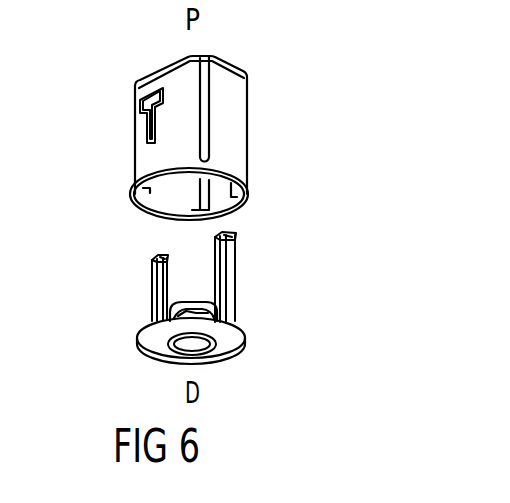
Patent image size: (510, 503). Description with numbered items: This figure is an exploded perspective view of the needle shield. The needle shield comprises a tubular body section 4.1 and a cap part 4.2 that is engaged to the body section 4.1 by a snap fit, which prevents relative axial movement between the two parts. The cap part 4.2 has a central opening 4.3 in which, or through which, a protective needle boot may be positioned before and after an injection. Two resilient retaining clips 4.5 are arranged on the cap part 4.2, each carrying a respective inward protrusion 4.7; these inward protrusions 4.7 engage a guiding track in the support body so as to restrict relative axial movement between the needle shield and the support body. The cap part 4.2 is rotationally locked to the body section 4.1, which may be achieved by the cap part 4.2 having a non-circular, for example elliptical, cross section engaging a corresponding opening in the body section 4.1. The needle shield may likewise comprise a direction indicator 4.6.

The tubular body section 4.1 is at (240, 115).
The cap part 4.2 is at (233, 338).
The central opening 4.3 is at (178, 345).
The resilient retaining clips 4.5 is at (155, 273).
The direction indicator 4.6 is at (140, 100).
The inward protrusion 4.7 is at (155, 262).